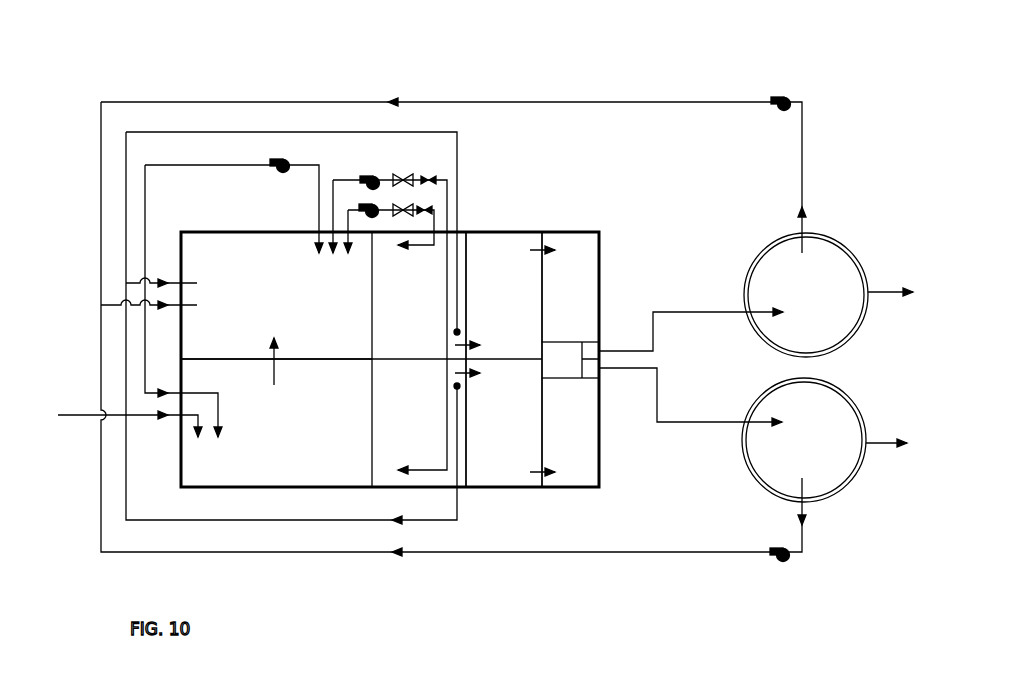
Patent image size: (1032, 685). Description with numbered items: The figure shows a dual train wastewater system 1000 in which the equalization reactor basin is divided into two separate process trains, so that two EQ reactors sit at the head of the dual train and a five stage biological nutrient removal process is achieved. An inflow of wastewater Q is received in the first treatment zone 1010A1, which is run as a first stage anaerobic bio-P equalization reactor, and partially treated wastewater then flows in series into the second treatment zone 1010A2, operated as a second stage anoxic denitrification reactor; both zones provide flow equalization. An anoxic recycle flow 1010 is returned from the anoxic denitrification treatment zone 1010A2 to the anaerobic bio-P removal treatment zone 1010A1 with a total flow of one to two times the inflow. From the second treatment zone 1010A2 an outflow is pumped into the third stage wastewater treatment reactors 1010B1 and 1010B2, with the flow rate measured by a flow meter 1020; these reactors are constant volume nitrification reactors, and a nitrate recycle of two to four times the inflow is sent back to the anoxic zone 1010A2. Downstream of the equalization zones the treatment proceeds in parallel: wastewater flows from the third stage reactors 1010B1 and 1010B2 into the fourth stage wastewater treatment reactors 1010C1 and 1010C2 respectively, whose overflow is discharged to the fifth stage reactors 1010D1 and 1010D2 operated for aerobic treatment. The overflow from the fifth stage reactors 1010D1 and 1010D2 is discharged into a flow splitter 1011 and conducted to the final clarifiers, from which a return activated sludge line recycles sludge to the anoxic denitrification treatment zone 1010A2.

The dual train wastewater system 1000 is at (427, 90).
The anoxic recycle flow 1010 is at (246, 165).
The flow meter 1020 is at (403, 172).
The second stage anoxic denitrification reactor 1010A2 is at (361, 324).
The first stage anaerobic bio-P equalization reactor 1010A1 is at (276, 423).
The third stage wastewater treatment reactor 1010B2 is at (419, 295).
The third stage wastewater treatment reactor 1010B1 is at (419, 423).
The fourth stage wastewater treatment reactor 1010C2 is at (505, 295).
The fourth stage wastewater treatment reactor 1010C1 is at (505, 423).
The fifth stage reactor 1010D2 is at (584, 283).
The fifth stage reactor 1010D1 is at (587, 438).
The flow splitter 1011 is at (562, 353).
The inflow of wastewater Q is at (130, 410).